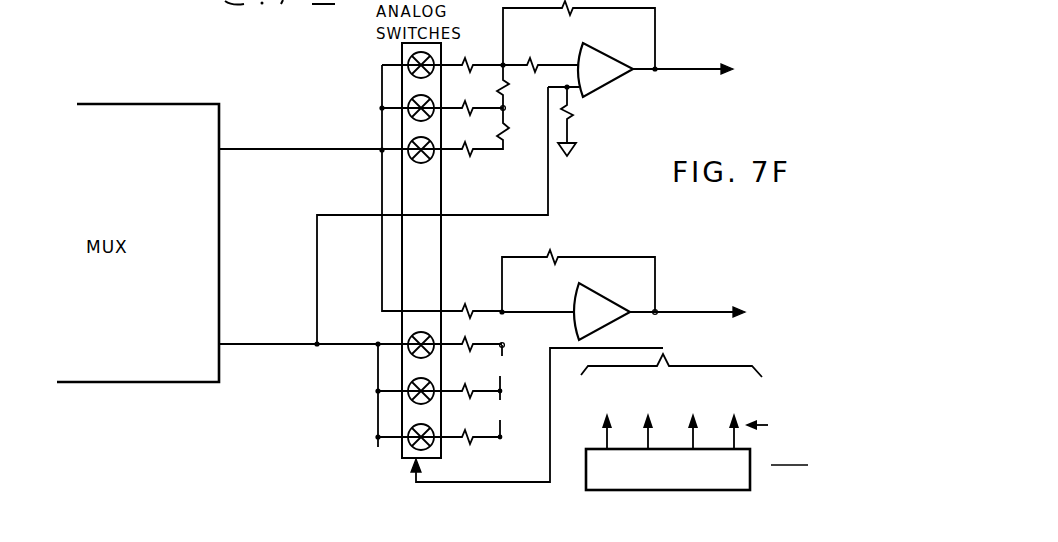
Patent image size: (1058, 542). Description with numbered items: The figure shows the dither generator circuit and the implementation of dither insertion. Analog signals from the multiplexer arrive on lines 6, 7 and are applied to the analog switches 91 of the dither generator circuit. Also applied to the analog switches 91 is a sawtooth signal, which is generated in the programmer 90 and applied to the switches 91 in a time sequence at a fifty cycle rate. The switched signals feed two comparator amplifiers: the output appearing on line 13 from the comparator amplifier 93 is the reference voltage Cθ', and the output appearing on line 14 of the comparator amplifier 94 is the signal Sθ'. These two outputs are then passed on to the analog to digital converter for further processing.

The line 6 is at (309, 149).
The line 7 is at (292, 344).
The line 13 is at (692, 69).
The line 14 is at (691, 312).
The programmer 90 is at (750, 483).
The analog switches 91 is at (440, 258).
The comparator amplifier 93 is at (607, 78).
The comparator amplifier 94 is at (598, 306).